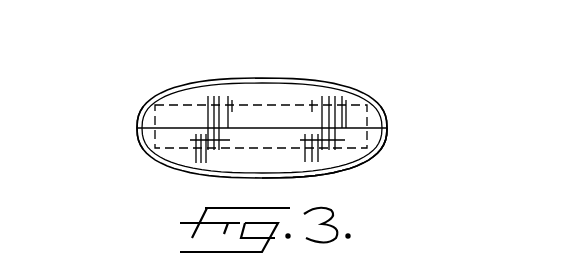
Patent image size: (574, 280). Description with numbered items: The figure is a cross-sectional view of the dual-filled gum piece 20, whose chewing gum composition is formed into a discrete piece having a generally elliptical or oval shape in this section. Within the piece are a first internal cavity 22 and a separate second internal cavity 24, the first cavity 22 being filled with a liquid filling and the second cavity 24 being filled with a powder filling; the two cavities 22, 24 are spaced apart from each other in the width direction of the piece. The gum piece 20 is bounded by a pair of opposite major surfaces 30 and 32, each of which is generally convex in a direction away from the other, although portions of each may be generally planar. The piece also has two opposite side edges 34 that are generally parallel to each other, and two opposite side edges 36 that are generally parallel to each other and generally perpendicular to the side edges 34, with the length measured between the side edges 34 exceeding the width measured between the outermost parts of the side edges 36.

The dual-filled gum piece 20 is at (166, 73).
The first internal cavity 22 is at (306, 103).
The second internal cavity 24 is at (189, 146).
The major surface 30 is at (256, 78).
The major surface 32 is at (337, 170).
The side edges 34 is at (137, 118).
The side edges 36 is at (343, 114).